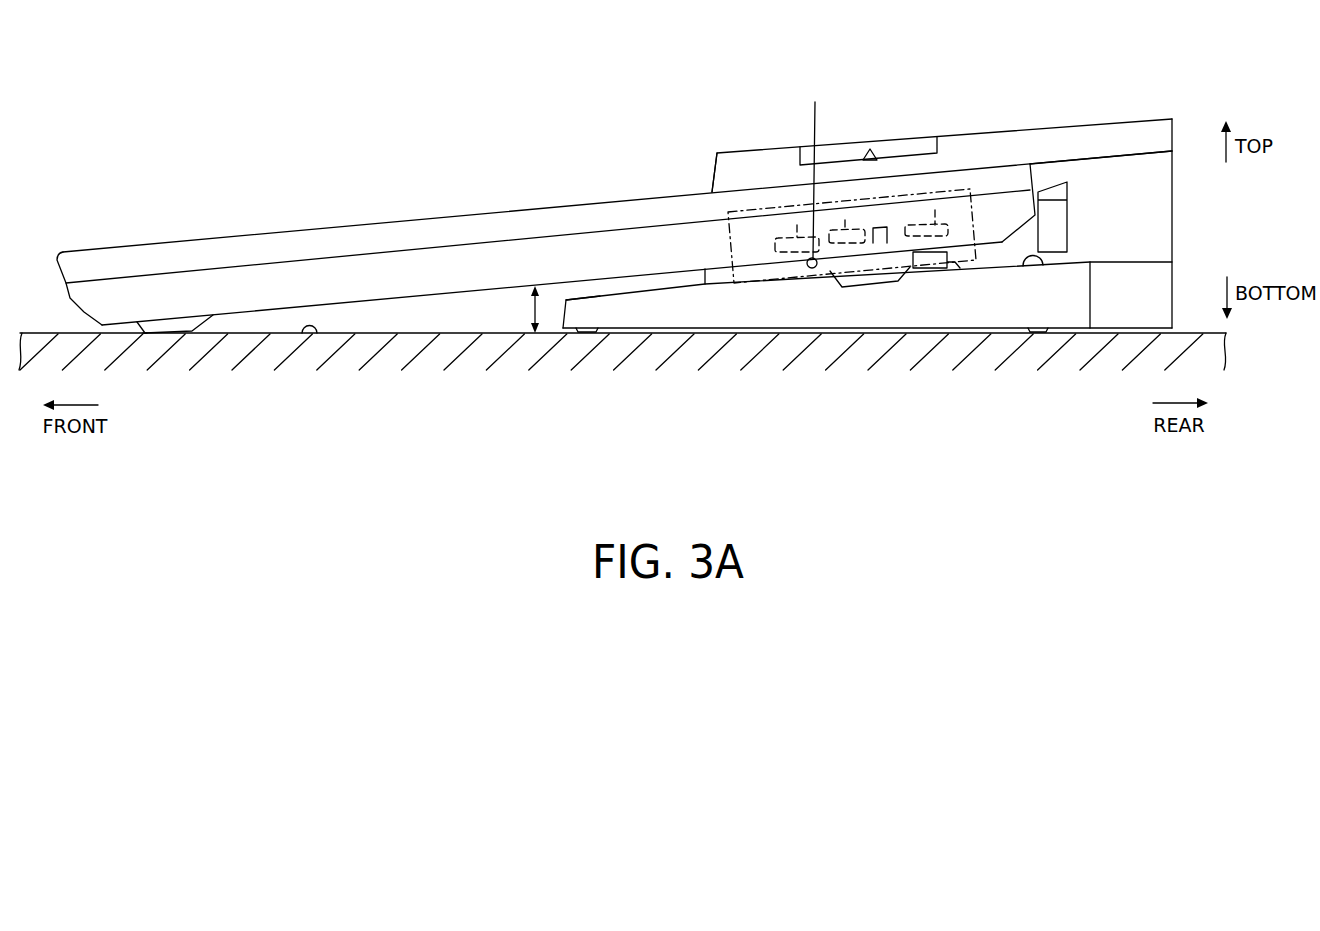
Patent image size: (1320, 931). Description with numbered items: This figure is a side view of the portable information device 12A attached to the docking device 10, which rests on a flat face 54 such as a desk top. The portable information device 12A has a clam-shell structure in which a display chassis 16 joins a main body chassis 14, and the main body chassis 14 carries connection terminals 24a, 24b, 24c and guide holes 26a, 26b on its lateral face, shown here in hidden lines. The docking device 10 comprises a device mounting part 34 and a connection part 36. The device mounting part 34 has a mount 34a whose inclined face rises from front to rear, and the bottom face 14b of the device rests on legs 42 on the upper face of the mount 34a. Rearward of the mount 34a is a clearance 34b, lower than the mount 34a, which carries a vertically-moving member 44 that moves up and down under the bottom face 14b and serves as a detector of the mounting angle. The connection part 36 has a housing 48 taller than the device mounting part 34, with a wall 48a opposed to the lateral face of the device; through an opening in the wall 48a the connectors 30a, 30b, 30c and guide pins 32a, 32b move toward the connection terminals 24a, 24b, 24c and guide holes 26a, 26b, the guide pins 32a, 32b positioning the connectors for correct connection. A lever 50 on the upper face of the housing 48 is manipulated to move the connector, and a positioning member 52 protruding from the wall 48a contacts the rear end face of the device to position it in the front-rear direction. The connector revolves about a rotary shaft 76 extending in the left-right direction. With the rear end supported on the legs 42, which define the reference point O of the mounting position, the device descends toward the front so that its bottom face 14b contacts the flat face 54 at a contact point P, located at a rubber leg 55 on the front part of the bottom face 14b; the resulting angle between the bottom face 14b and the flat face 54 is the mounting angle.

The docking device 10 is at (1182, 200).
The portable information device 12A is at (124, 233).
The main body chassis 14 is at (568, 303).
The bottom face 14b is at (363, 305).
The display chassis 16 is at (213, 247).
The connection terminal 24a is at (819, 234).
The connection terminal 24b is at (865, 152).
The connection terminal 24c is at (925, 252).
The connector 30a is at (819, 234).
The connector 30b is at (847, 220).
The connector 30c is at (925, 252).
The guide hole 26a is at (819, 234).
The guide hole 26b is at (925, 252).
The guide pin 32a is at (795, 230).
The guide pin 32b is at (937, 210).
The device mounting part 34 is at (903, 276).
The mount 34a is at (583, 298).
The clearance 34b is at (1035, 270).
The connection part 36 is at (718, 150).
The leg 42 is at (812, 270).
The vertically-moving member 44 is at (938, 268).
The housing 48 is at (937, 135).
The wall 48a is at (1117, 183).
The lever 50 is at (905, 150).
The positioning member 52 is at (1052, 188).
The flat face 54 is at (310, 334).
The rubber leg 55 is at (192, 327).
The rotary shaft 76 is at (802, 271).
The contact point P is at (146, 335).
The reference point O is at (815, 169).